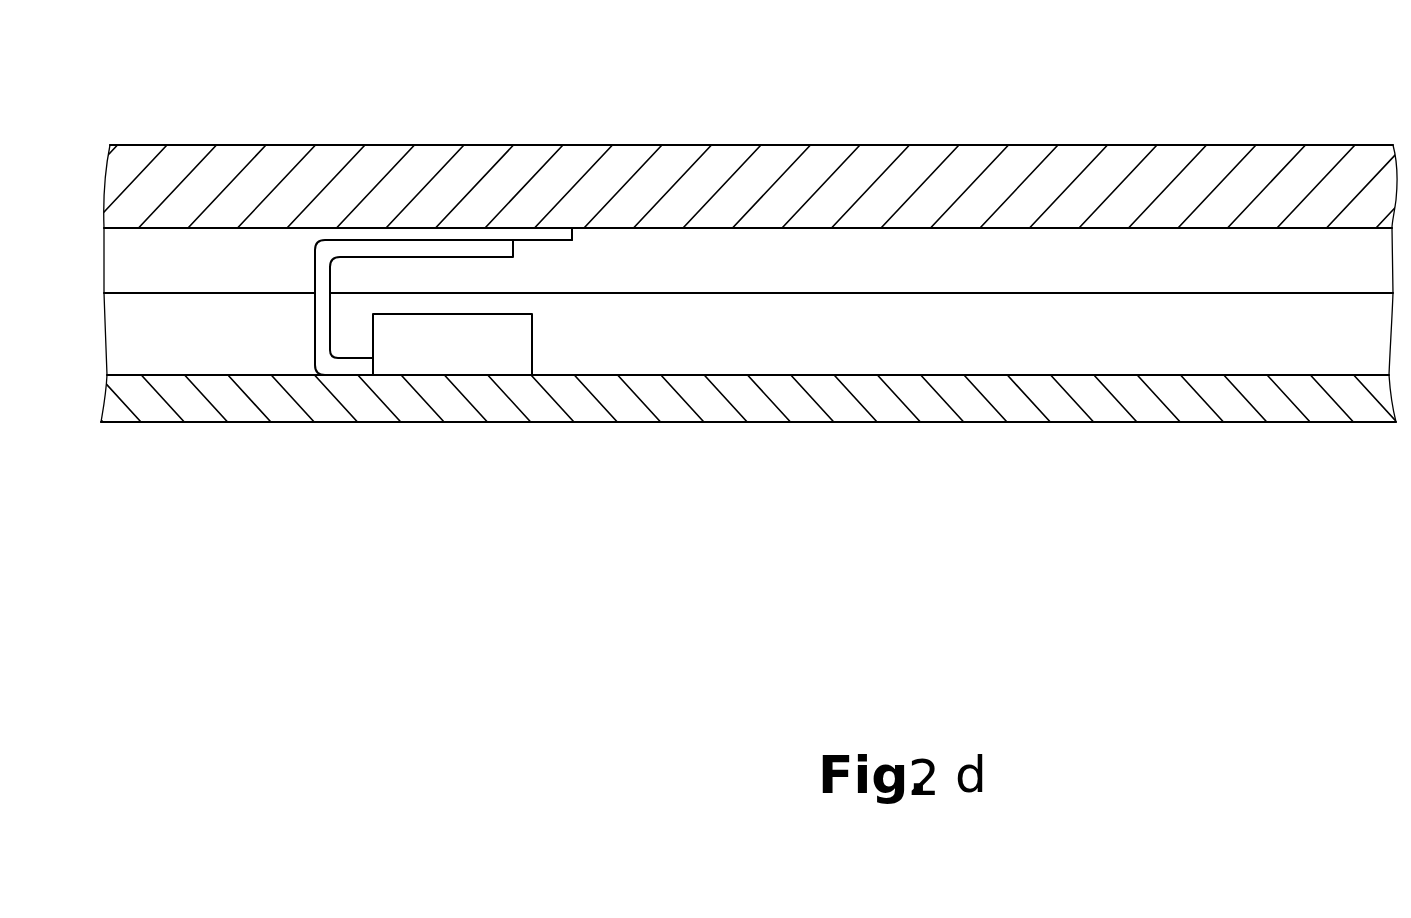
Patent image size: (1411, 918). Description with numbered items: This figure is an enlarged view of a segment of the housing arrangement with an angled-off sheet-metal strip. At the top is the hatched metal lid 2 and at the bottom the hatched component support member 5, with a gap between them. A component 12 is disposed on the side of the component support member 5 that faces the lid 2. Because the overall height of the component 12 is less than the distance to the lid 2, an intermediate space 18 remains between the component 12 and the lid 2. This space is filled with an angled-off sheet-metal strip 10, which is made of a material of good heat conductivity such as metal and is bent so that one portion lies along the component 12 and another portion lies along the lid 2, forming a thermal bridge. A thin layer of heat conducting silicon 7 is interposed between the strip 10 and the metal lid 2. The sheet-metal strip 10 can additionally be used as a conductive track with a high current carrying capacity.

The metal lid 2 is at (622, 155).
The component support member 5 is at (723, 413).
The layer of heat conducting silicon 7 is at (487, 225).
The angled-off sheet-metal strip 10 is at (322, 316).
The component 12 is at (515, 348).
The intermediate space 18 is at (407, 277).